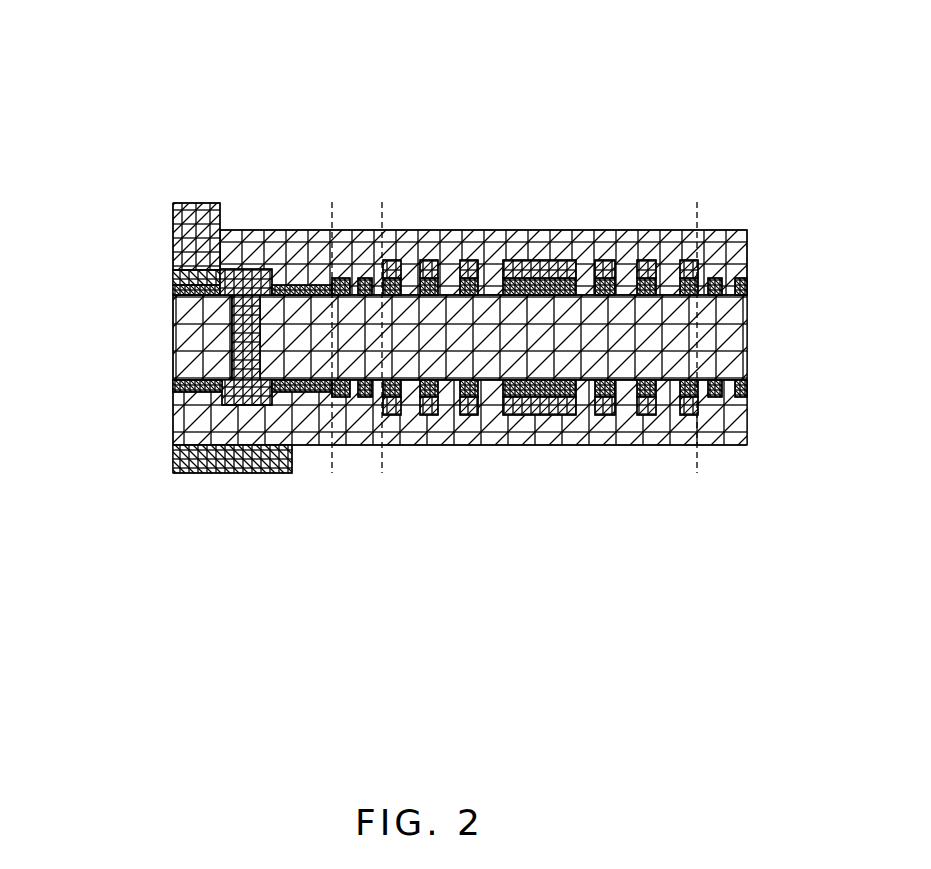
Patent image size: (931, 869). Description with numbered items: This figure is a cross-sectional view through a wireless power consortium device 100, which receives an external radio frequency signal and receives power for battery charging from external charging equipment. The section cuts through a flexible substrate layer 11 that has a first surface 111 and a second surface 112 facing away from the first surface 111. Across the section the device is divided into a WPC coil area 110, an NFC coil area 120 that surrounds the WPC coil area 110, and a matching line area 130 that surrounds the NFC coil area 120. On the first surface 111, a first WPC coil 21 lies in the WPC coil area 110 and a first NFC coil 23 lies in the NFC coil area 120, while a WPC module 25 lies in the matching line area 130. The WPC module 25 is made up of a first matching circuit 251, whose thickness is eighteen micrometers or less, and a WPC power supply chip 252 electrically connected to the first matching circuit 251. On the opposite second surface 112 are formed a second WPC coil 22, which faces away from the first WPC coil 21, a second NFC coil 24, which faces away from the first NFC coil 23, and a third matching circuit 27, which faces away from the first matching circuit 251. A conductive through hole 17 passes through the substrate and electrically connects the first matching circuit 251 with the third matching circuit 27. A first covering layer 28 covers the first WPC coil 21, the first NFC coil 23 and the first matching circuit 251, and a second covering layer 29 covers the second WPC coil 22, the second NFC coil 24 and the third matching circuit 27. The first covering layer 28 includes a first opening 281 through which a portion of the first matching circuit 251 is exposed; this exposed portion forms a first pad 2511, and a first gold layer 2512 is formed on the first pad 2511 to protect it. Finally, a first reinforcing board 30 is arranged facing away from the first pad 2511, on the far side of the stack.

The wireless power consortium device 100 is at (432, 62).
The flexible substrate layer 11 is at (733, 340).
The WPC coil area 110 is at (542, 198).
The first surface 111 is at (622, 292).
The second surface 112 is at (588, 383).
The NFC coil area 120 is at (367, 203).
The matching line area 130 is at (298, 203).
The conductive through hole 17 is at (222, 326).
The first WPC coil 21 is at (565, 264).
The second WPC coil 22 is at (560, 400).
The first NFC coil 23 is at (368, 282).
The second NFC coil 24 is at (365, 393).
The WPC module 25 is at (265, 146).
The first matching circuit 251 is at (298, 287).
The first pad 2511 is at (190, 290).
The first gold layer 2512 is at (178, 276).
The WPC power supply chip 252 is at (198, 215).
The third matching circuit 27 is at (200, 387).
The first covering layer 28 is at (737, 247).
The first opening 281 is at (220, 250).
The second covering layer 29 is at (195, 433).
The first reinforcing board 30 is at (195, 462).